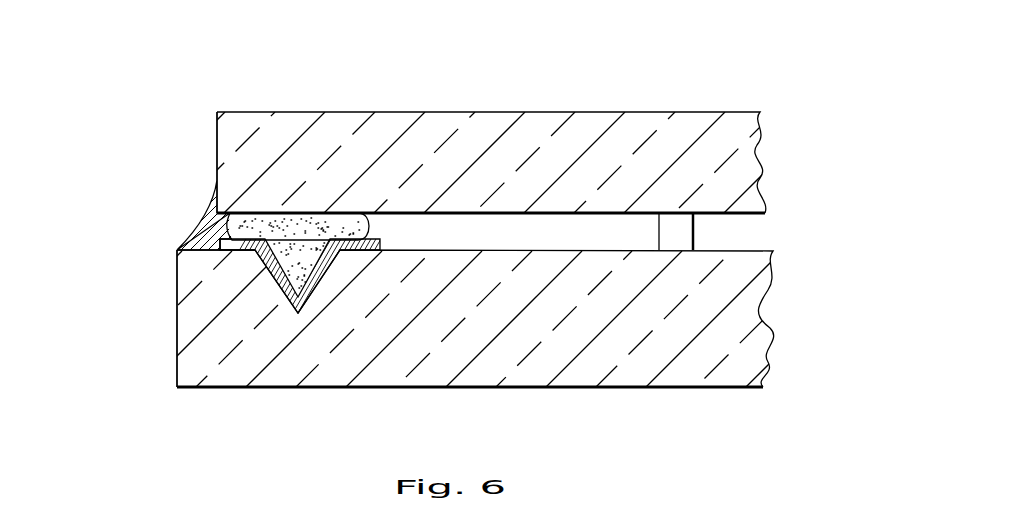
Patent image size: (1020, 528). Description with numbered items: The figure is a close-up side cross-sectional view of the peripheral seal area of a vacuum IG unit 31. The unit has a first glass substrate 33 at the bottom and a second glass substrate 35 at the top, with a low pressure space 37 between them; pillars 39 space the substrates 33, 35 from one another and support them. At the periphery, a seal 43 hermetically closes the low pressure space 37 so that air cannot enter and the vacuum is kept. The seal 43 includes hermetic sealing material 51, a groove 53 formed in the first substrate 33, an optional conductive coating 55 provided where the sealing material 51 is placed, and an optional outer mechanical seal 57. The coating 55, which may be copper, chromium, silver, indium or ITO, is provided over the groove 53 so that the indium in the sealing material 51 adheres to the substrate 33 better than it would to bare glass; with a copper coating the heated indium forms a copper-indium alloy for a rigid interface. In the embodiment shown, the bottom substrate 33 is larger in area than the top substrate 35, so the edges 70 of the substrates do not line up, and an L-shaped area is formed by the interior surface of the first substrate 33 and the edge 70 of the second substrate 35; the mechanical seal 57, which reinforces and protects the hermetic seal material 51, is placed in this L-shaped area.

The vacuum IG unit 31 is at (677, 86).
The first glass substrate 33 is at (577, 367).
The second glass substrate 35 is at (425, 132).
The low pressure space 37 is at (526, 242).
The pillars 39 is at (682, 230).
The peripheral seal 43 is at (168, 198).
The hermetic sealing material 51 is at (308, 247).
The groove 53 is at (314, 278).
The conductive coating 55 is at (240, 250).
The outer mechanical seal 57 is at (196, 229).
The edges 70 is at (217, 150).